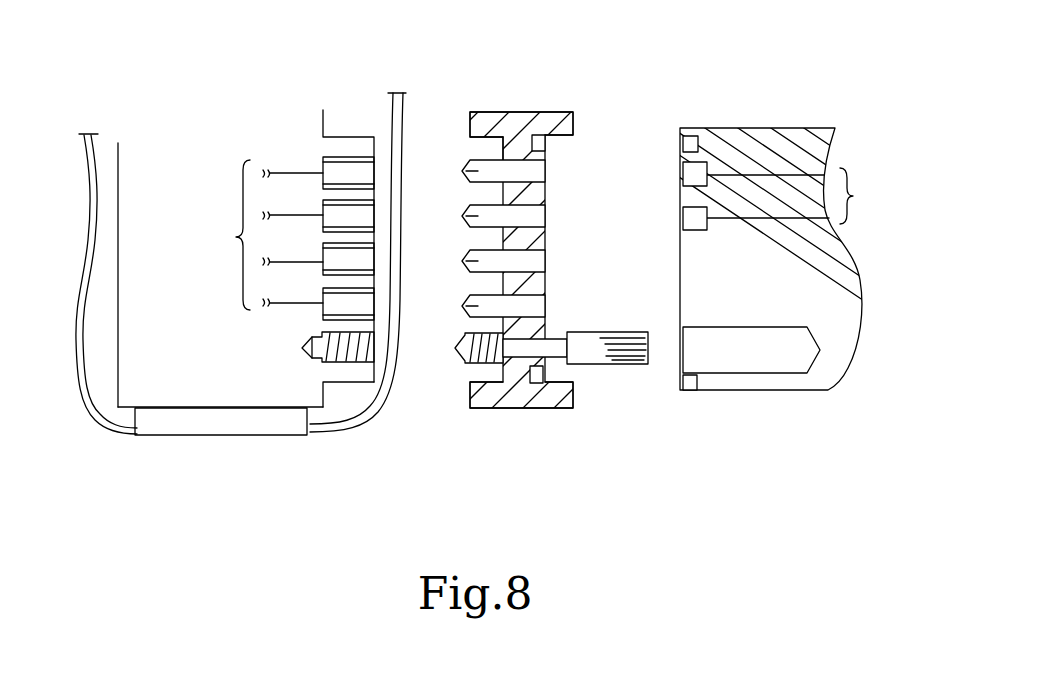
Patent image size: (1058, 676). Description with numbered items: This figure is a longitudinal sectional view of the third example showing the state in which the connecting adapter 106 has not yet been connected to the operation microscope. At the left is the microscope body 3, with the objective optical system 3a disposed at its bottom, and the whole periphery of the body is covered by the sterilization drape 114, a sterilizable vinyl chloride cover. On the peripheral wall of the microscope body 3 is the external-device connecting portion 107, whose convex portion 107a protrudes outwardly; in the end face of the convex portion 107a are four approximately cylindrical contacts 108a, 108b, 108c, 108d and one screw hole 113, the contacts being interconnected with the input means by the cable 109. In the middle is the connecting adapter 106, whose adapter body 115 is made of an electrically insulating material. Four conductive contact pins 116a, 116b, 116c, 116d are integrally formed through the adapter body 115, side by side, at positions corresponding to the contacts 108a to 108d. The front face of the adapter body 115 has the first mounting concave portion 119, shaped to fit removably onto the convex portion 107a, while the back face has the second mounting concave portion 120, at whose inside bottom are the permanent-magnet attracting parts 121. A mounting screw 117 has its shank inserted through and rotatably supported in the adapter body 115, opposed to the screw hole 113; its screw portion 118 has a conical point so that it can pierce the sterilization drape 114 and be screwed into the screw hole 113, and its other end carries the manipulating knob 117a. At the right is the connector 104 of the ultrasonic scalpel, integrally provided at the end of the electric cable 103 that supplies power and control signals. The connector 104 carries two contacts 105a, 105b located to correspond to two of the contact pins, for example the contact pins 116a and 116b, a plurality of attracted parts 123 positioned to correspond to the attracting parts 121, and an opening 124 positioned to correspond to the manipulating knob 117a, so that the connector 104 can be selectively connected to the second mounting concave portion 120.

The microscope body 3 is at (130, 316).
The objective optical system 3a is at (190, 422).
The sterilization drape 114 is at (96, 428).
The external-device connecting portion 107 is at (360, 115).
The convex portion 107a is at (340, 386).
The contact 108a is at (332, 164).
The contact 108b is at (332, 209).
The contact 108c is at (323, 272).
The contact 108d is at (322, 318).
The cable 109 is at (252, 235).
The screw hole 113 is at (356, 366).
The connecting adapter 106 is at (535, 92).
The adapter body 115 is at (573, 108).
The first mounting concave portion 119 is at (470, 140).
The attracting parts 121 is at (548, 142).
The second mounting concave portion 120 is at (578, 385).
The contact pin 116a is at (460, 169).
The contact pin 116b is at (460, 215).
The contact pin 116c is at (460, 260).
The contact pin 116d is at (460, 305).
The screw portion 118 is at (463, 366).
The mounting screw 117 is at (578, 315).
The manipulating knob 117a is at (610, 367).
The connector 104 is at (786, 104).
The opening 124 is at (773, 368).
The electric cable 103 is at (804, 196).
The attracted parts 123 is at (681, 139).
The contact 105a is at (681, 173).
The contact 105b is at (681, 218).